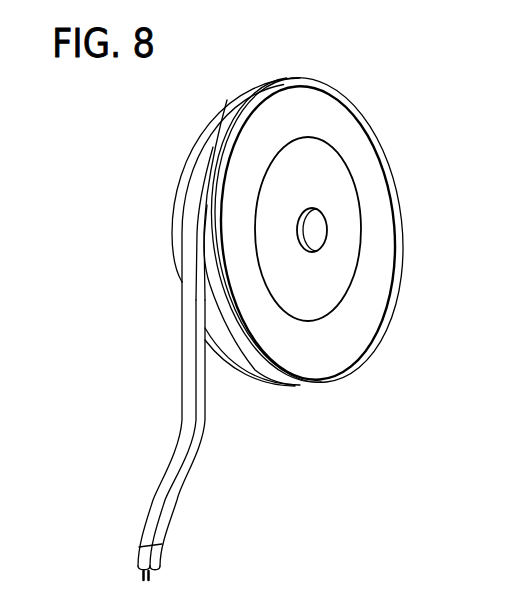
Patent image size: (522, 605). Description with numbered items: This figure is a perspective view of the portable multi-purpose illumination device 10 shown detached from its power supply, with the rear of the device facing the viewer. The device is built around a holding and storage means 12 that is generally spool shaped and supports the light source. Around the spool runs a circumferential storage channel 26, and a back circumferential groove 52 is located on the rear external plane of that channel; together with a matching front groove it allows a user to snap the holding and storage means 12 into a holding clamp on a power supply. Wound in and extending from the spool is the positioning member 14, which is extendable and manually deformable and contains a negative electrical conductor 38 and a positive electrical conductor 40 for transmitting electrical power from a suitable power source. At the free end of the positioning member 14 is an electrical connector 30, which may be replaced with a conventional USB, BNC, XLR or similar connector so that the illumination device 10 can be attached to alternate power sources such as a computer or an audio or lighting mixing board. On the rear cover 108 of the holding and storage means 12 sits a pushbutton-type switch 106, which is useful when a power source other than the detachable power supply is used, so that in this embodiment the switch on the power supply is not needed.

The portable multi-purpose illumination device 10 is at (138, 249).
The holding and storage means 12 is at (386, 146).
The positioning member 14 is at (198, 457).
The circumferential storage channel 26 is at (213, 128).
The electrical connector 30 is at (141, 558).
The negative electrical conductor 38 is at (150, 577).
The positive electrical conductor 40 is at (143, 575).
The back circumferential groove 52 is at (374, 318).
The switch 106 is at (320, 240).
The rear cover 108 is at (334, 270).